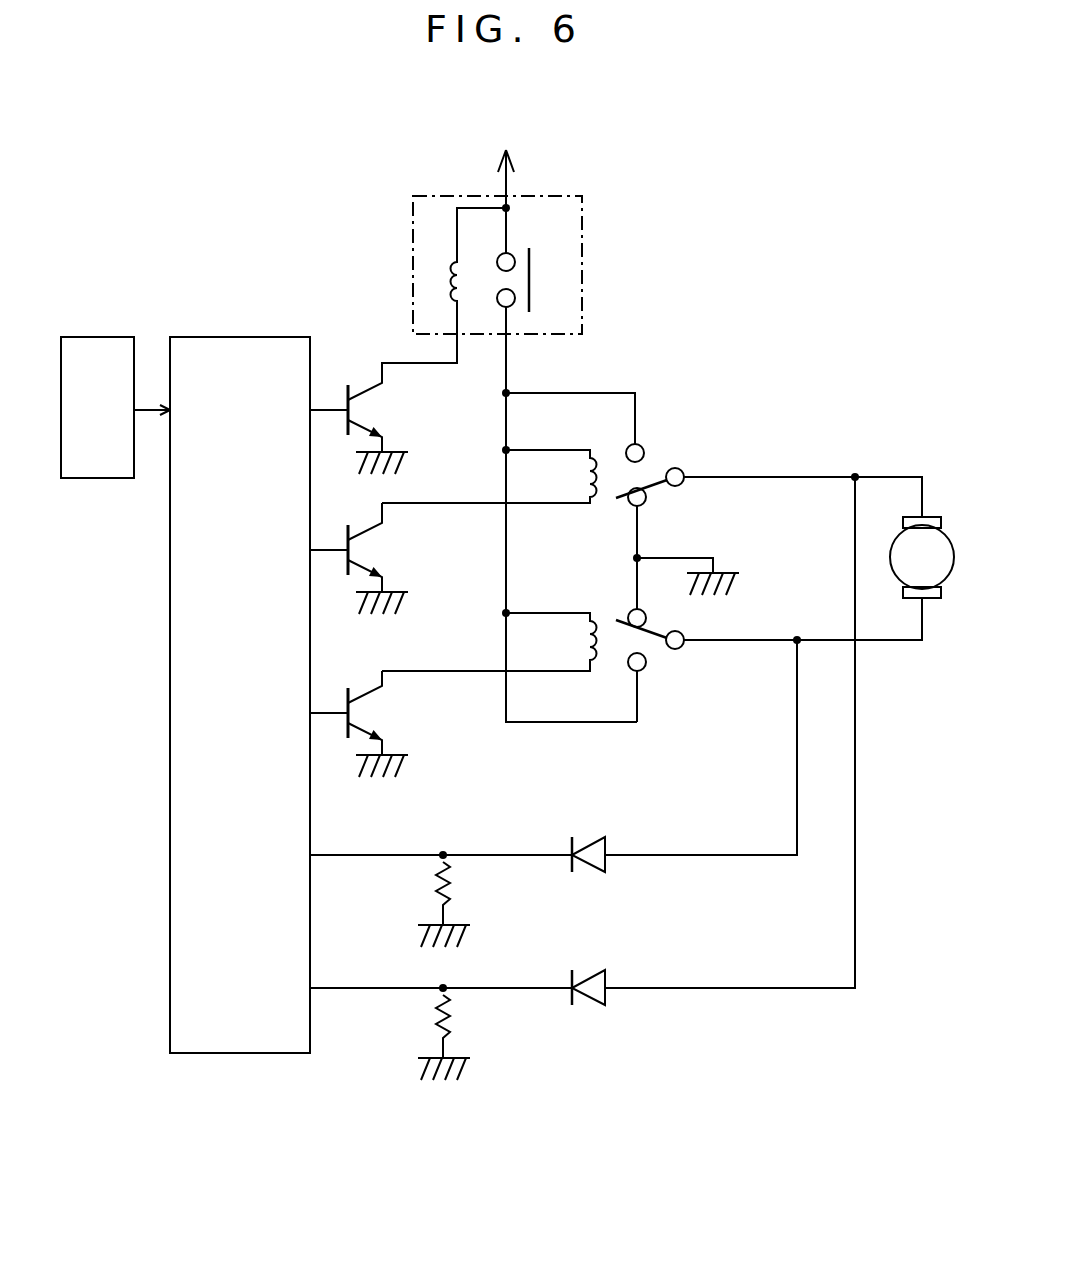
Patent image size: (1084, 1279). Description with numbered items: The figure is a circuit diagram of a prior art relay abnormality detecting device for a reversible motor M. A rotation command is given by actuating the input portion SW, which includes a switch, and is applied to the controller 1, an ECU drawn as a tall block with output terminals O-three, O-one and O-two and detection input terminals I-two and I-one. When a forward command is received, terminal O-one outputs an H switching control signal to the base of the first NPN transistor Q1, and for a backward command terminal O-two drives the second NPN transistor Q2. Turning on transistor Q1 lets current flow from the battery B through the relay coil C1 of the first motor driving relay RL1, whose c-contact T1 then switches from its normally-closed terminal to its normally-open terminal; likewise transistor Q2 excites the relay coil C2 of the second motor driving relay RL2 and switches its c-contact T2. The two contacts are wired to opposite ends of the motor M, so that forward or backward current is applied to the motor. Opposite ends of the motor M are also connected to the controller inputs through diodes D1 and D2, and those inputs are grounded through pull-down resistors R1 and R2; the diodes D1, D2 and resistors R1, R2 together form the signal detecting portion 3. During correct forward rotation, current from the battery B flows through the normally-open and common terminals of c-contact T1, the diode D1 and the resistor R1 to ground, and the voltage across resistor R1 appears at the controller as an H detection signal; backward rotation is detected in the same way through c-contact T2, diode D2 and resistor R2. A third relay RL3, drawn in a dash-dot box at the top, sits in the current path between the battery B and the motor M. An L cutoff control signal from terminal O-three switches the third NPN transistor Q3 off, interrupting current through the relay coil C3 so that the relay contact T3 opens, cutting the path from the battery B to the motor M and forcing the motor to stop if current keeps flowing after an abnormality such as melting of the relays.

The battery B is at (558, 413).
The input portion SW is at (100, 333).
The controller 1 is at (232, 335).
The third NPN transistor Q3 is at (383, 427).
The first NPN transistor Q1 is at (383, 567).
The second NPN transistor Q2 is at (383, 730).
The third relay RL3 is at (508, 275).
The relay coil C3 is at (438, 277).
The relay contact T3 is at (535, 278).
The first motor driving relay RL1 is at (652, 477).
The relay coil C1 is at (575, 468).
The c-contact T1 is at (670, 498).
The second motor driving relay RL2 is at (652, 666).
The relay coil C2 is at (580, 632).
The c-contact T2 is at (655, 658).
The motor M is at (922, 557).
The signal detecting portion 3 is at (563, 1072).
The pull-down resistor R2 is at (437, 895).
The pull-down resistor R1 is at (437, 1028).
The diode D2 is at (607, 870).
The diode D1 is at (607, 1003).